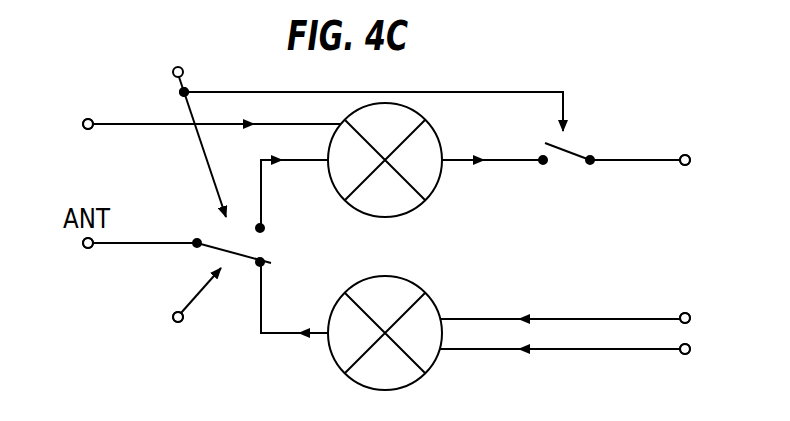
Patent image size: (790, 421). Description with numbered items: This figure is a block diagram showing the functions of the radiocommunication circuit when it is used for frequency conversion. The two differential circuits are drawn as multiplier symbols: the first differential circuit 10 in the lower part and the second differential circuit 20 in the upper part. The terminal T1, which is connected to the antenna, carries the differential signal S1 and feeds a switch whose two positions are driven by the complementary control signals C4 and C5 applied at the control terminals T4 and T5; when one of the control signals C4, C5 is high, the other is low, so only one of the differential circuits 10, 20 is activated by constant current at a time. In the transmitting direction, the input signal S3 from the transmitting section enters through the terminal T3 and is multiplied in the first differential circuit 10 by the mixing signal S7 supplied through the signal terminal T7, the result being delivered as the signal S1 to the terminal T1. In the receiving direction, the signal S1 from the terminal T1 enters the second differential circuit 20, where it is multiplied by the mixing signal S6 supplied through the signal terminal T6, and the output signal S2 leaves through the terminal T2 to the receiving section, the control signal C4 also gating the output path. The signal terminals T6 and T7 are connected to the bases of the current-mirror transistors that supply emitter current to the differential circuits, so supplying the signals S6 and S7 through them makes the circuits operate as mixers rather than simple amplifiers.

The first differential circuit 10 is at (430, 375).
The second differential circuit 20 is at (440, 146).
The differential signal S1 is at (71, 243).
The output signal S2 is at (702, 162).
The input signal S3 is at (702, 320).
The signal for mixing use S6 is at (71, 123).
The signal for mixing use S7 is at (702, 350).
The terminal T1 is at (88, 249).
The terminal T2 is at (683, 155).
The terminal T3 is at (683, 313).
The control terminal T4 is at (176, 68).
The control terminal T5 is at (175, 321).
The signal terminal T6 is at (88, 130).
The signal terminal T7 is at (685, 354).
The control signal C4 is at (198, 79).
The control signal C5 is at (194, 320).